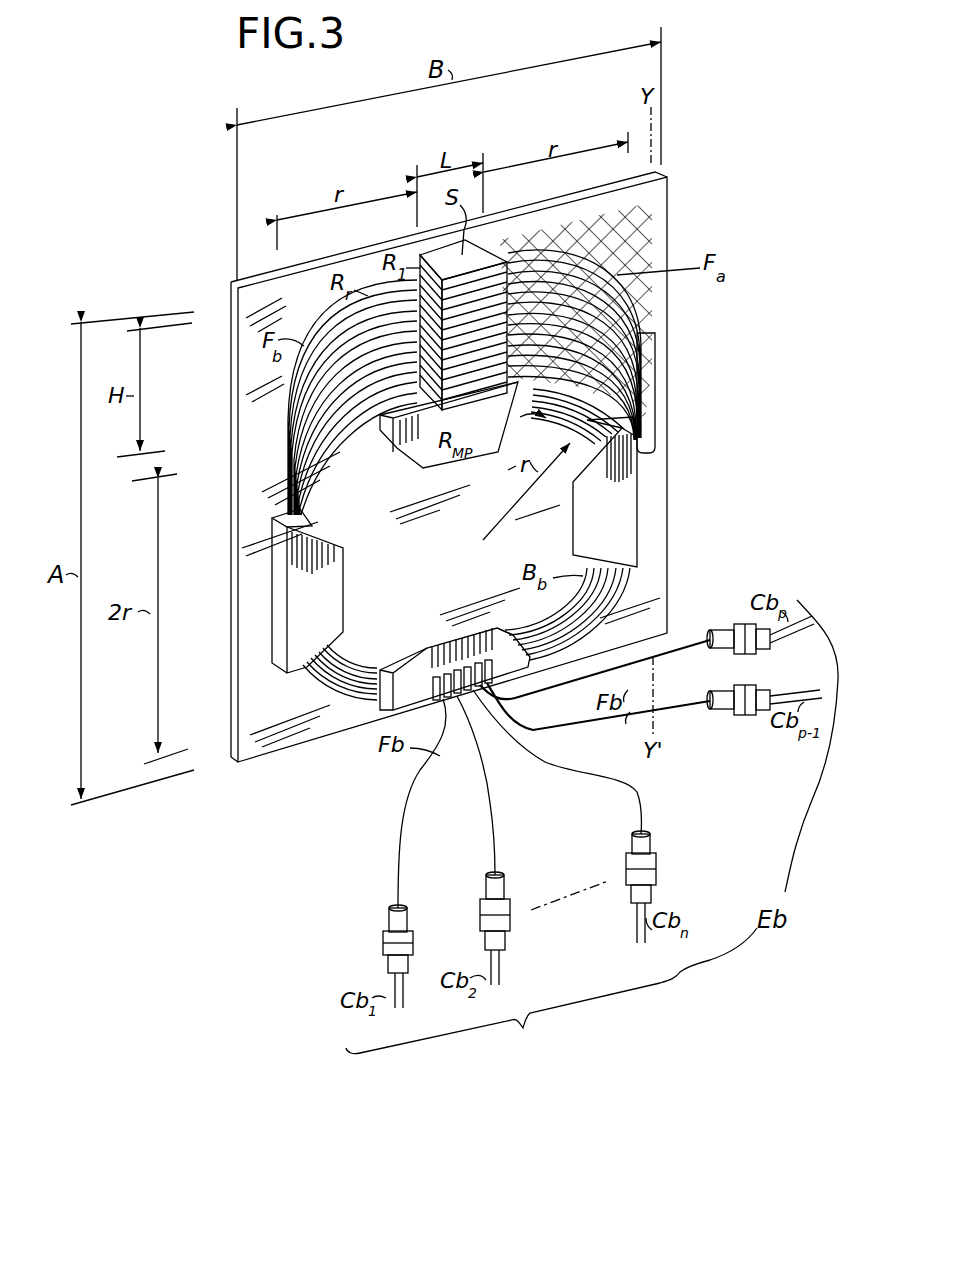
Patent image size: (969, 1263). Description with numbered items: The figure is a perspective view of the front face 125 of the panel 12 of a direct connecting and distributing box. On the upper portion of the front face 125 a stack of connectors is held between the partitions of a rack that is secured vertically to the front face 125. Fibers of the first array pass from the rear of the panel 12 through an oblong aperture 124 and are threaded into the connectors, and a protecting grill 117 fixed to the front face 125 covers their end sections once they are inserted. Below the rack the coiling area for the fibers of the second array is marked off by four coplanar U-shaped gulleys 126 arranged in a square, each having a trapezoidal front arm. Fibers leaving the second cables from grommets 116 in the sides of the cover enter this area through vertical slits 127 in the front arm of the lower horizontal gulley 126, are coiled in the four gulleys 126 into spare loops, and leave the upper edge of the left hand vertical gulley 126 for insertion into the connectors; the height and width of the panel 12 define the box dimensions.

The panel 12 is at (688, 455).
The grommet 116 is at (390, 926).
The protecting grill 117 is at (640, 213).
The oblong aperture 124 is at (650, 405).
The front face 125 is at (236, 344).
The gulley 126 is at (420, 453).
The vertical slit 127 is at (468, 704).